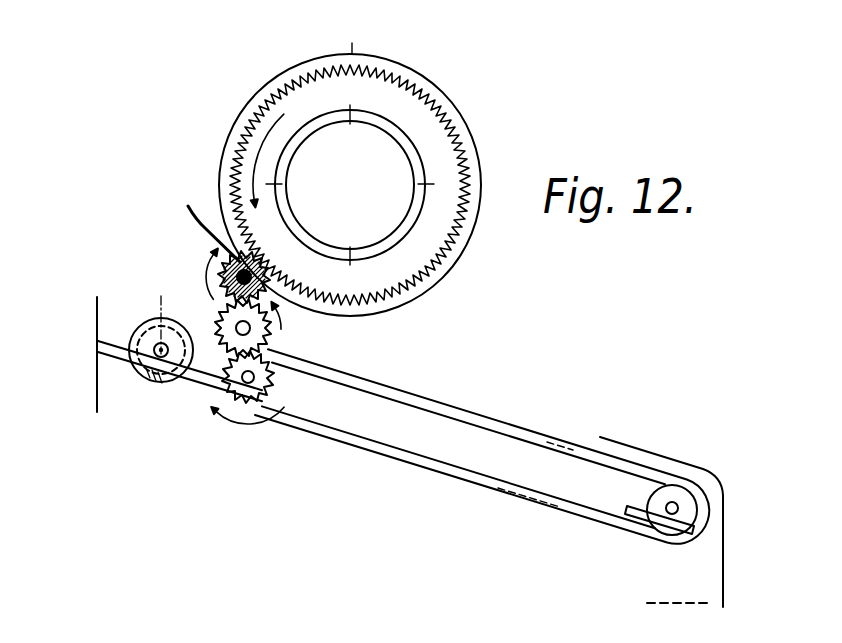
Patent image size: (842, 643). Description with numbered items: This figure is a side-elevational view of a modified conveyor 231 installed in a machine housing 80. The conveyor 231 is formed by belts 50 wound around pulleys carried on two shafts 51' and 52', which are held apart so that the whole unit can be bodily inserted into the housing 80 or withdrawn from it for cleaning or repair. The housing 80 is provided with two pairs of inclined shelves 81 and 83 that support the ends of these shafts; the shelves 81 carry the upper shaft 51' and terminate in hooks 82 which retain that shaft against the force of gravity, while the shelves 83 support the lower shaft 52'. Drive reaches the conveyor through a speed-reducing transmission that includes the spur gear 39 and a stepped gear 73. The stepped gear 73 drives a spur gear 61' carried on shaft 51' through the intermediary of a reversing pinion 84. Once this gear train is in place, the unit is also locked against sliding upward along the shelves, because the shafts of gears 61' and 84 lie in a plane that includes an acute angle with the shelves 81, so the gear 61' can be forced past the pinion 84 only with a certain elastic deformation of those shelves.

The spur gear 39 is at (393, 67).
The stepped gear 73 is at (222, 183).
The reversing pinion 84 is at (214, 318).
The shaft 51' is at (236, 377).
The machine housing 80 is at (95, 376).
The inclined shelves 81 is at (199, 386).
The hooks 82 is at (273, 386).
The spur gear 61' is at (267, 421).
The belts 50 is at (446, 400).
The conveyor 231 is at (545, 424).
The shaft 52' is at (710, 503).
The inclined shelves 83 is at (662, 533).